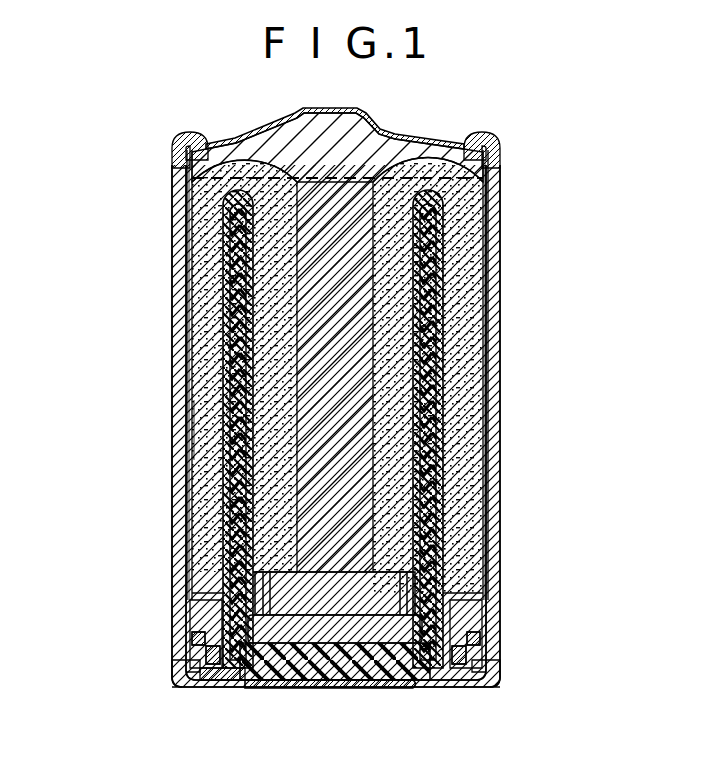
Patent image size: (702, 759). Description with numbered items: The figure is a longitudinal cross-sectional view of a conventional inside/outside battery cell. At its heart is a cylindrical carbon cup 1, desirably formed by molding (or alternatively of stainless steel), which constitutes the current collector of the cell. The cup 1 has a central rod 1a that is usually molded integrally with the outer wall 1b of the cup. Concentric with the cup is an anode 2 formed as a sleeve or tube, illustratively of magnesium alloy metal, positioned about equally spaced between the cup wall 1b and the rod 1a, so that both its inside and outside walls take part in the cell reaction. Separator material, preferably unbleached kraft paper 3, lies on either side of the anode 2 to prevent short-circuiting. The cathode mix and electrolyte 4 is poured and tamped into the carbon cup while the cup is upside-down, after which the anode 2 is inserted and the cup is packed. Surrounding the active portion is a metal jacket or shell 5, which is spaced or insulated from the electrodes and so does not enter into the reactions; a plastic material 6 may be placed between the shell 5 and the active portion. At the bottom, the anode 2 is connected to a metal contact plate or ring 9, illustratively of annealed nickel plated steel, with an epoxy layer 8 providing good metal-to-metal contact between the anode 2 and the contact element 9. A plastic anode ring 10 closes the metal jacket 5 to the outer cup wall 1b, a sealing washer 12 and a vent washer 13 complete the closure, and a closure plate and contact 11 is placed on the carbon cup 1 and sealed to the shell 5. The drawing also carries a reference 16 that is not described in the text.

The carbon cup 1 is at (345, 133).
The central rod 1a is at (313, 337).
The outer wall 1b is at (192, 237).
The anode 2 is at (237, 518).
The kraft paper 3 is at (267, 385).
The cathode mix and electrolyte 4 is at (250, 478).
The metal jacket 5 is at (173, 307).
The plastic material 6 is at (177, 253).
The epoxy layer 8 is at (297, 687).
The metal contact plate 9 is at (370, 690).
The plastic anode ring 10 is at (222, 683).
The closure plate and contact 11 is at (240, 133).
The sealing washer 12 is at (198, 640).
The vent washer 13 is at (193, 140).
The separator 16 is at (190, 432).